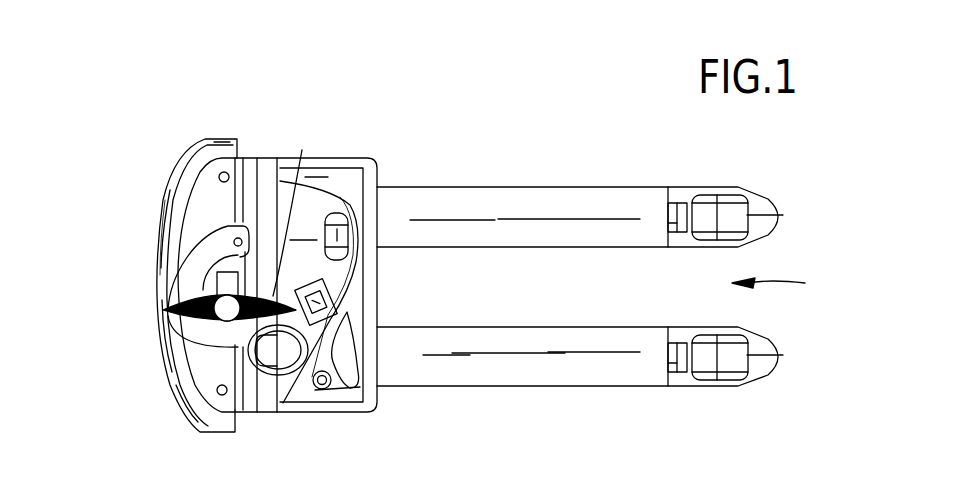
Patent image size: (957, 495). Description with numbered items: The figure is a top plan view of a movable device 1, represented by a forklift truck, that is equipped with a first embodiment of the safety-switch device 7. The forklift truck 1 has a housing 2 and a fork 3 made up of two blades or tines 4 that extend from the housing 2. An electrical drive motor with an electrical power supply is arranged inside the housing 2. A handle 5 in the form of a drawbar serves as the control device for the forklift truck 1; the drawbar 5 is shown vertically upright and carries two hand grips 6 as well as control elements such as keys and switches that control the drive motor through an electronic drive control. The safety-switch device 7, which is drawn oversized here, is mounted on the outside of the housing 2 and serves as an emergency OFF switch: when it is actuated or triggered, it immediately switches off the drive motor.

The movable device 1 is at (253, 123).
The housing 2 is at (313, 220).
The fork 3 is at (781, 281).
The tines 4 is at (536, 347).
The handle 5 is at (232, 310).
The hand grips 6 is at (277, 298).
The safety-switch device 7 is at (163, 195).